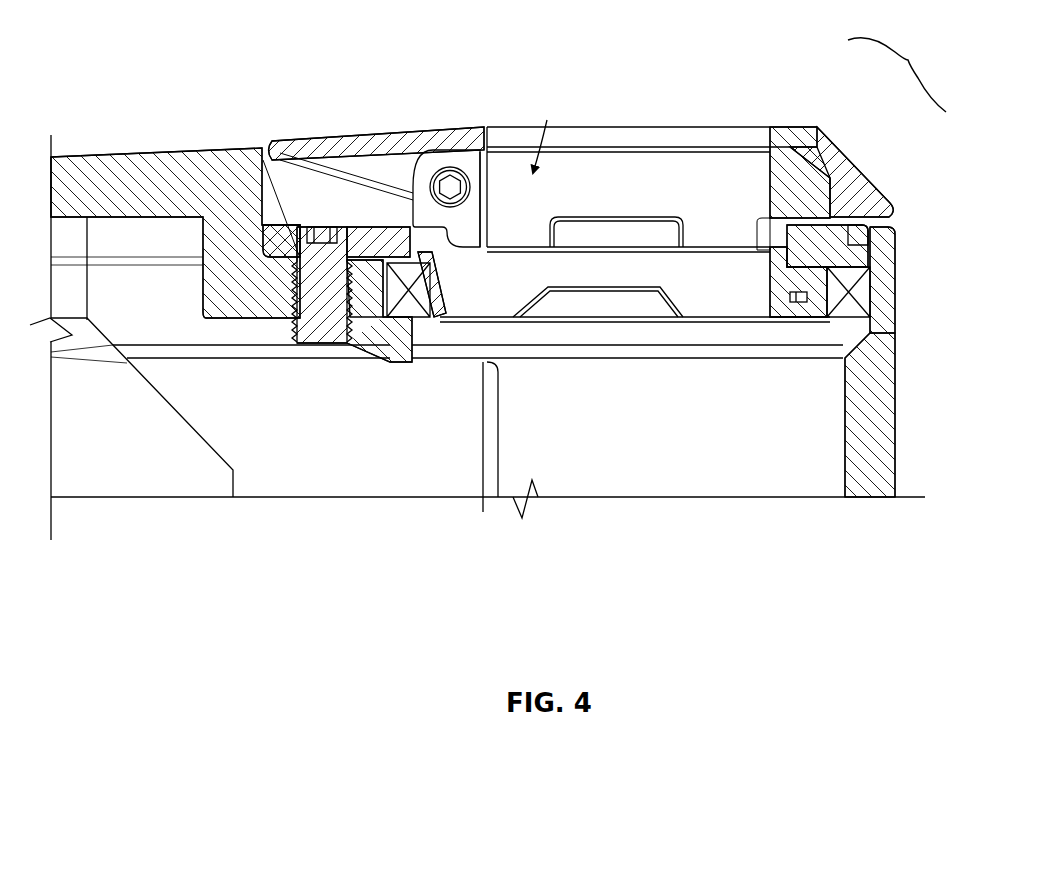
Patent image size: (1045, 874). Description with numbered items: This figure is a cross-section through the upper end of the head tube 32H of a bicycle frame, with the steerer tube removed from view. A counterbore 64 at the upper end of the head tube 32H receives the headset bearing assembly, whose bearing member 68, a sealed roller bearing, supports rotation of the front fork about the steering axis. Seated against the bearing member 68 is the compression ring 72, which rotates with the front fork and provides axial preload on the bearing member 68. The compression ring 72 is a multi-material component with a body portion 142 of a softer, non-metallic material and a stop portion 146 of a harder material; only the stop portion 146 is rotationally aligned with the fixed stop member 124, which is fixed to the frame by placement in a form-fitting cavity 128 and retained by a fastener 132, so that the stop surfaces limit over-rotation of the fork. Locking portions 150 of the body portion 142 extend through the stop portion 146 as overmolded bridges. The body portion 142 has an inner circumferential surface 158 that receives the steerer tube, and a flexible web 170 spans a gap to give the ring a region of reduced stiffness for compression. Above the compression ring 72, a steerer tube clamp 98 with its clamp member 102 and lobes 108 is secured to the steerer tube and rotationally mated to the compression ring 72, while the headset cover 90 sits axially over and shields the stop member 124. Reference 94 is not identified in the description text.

The head tube 32H is at (868, 460).
The counterbore 64 is at (870, 234).
The bearing member 68 is at (398, 312).
The compression ring 72 is at (897, 70).
The headset cover 90 is at (784, 137).
The cover ring 94 is at (490, 148).
The steerer tube clamp 98 is at (547, 129).
The clamp member 102 is at (775, 195).
The lobes 108 is at (430, 165).
The fixed stop member 124 is at (380, 240).
The form-fitting cavity 128 is at (293, 243).
The fastener 132 is at (327, 227).
The body portion 142 is at (866, 224).
The stop portion 146 is at (807, 243).
The locking portions 150 is at (795, 302).
The inner circumferential surface 158 is at (767, 287).
The flexible web 170 is at (443, 300).